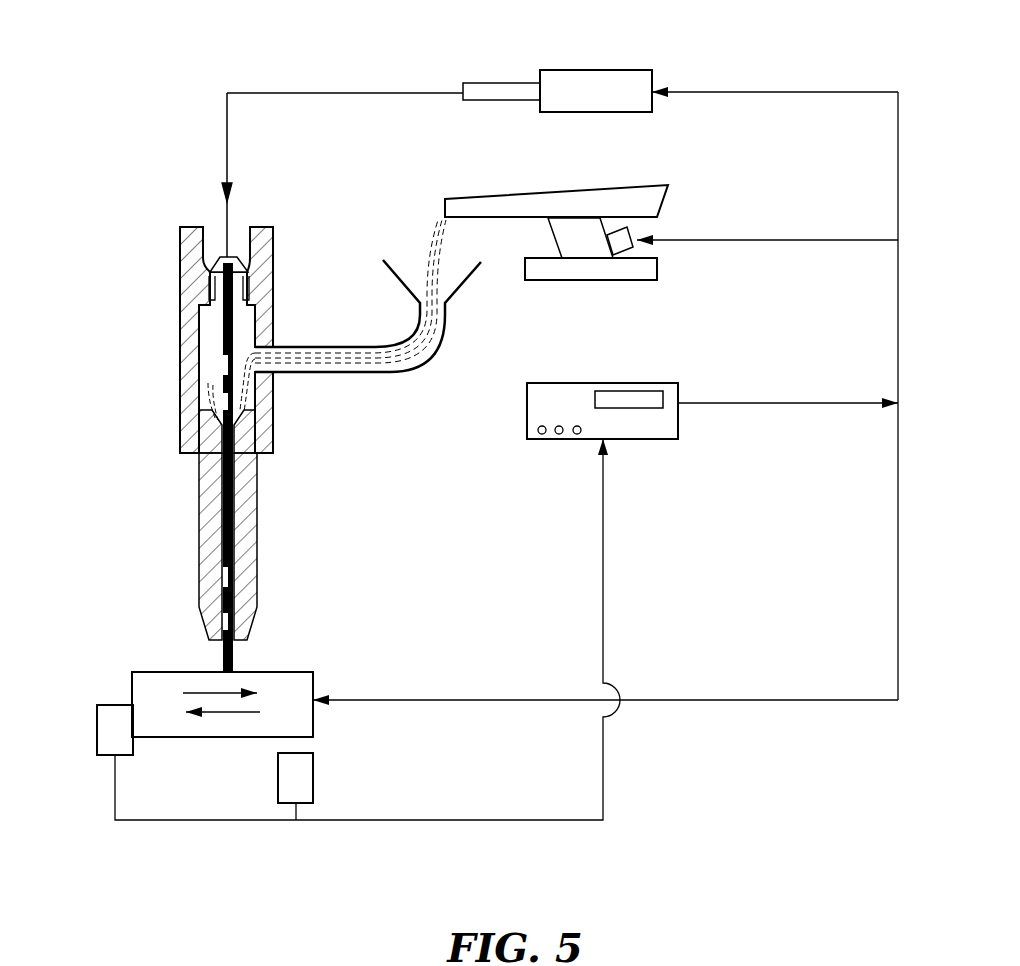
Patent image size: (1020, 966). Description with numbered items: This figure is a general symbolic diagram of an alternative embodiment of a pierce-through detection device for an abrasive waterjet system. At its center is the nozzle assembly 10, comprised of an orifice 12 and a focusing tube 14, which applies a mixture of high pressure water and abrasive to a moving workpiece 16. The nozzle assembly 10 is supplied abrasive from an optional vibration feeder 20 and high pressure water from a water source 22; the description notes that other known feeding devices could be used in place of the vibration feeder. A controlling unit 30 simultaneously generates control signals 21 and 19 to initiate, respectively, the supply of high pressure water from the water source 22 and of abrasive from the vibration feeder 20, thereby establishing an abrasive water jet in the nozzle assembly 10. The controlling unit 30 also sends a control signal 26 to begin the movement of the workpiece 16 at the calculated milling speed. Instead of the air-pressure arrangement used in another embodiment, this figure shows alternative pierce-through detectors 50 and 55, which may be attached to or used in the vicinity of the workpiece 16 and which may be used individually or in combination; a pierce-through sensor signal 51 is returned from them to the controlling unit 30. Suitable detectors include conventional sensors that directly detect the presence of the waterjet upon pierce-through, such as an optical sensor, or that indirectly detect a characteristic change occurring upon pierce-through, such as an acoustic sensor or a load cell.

The nozzle assembly 10 is at (165, 358).
The orifice 12 is at (213, 257).
The focusing tube 14 is at (257, 540).
The workpiece 16 is at (168, 672).
The control signal 19 is at (803, 240).
The vibration feeder 20 is at (664, 200).
The control signal 21 is at (804, 92).
The water source 22 is at (580, 112).
The control signal 26 is at (373, 700).
The controlling unit 30 is at (678, 425).
The pierce-through detector 50 is at (97, 725).
The pierce-through sensor signal 51 is at (603, 563).
The pierce-through detector 55 is at (278, 774).